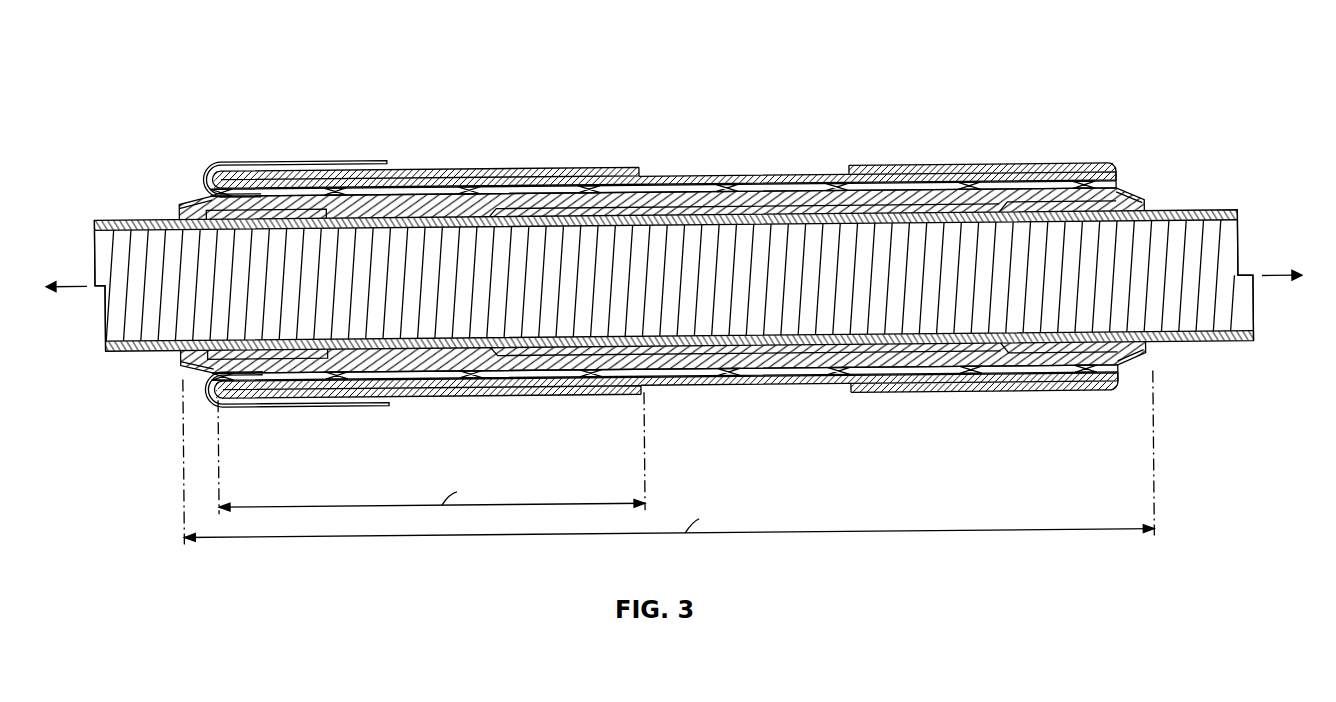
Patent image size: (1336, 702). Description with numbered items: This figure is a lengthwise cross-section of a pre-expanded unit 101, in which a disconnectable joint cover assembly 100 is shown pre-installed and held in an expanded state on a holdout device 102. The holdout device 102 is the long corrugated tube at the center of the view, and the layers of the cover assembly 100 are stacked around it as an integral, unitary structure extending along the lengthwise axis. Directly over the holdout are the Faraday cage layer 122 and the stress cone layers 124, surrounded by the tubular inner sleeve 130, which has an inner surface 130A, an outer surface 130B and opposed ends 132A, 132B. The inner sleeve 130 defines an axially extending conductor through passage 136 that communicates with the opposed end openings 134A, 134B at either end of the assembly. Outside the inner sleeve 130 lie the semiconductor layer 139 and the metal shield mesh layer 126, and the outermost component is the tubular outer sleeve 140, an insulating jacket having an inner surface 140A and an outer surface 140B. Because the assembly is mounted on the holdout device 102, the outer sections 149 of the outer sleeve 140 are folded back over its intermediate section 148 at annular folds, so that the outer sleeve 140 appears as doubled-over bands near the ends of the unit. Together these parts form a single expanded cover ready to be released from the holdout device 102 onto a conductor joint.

The disconnectable joint cover assembly 100 is at (193, 57).
The pre-expanded unit 101 is at (926, 90).
The holdout device 102 is at (168, 346).
The Faraday cage layer 122 is at (515, 368).
The stress cone layers 124 is at (237, 358).
The metal shield mesh layer 126 is at (1082, 192).
The inner sleeve 130 is at (452, 208).
The inner surface of inner sleeve 130A is at (372, 228).
The outer surface of inner sleeve 130B is at (333, 200).
The first end of inner sleeve 132A is at (180, 205).
The second end of inner sleeve 132B is at (1148, 205).
The first end opening 134A is at (193, 308).
The second end opening 134B is at (1175, 297).
The conductor through passage 136 is at (393, 309).
The semiconductor layer 139 is at (780, 190).
The outer sleeve 140 is at (599, 166).
The inner surface of outer sleeve 140A is at (978, 186).
The outer surface of outer sleeve 140B is at (675, 180).
The intermediate section of outer sleeve 148 is at (656, 178).
The outer sections of outer sleeve 149 is at (505, 166).